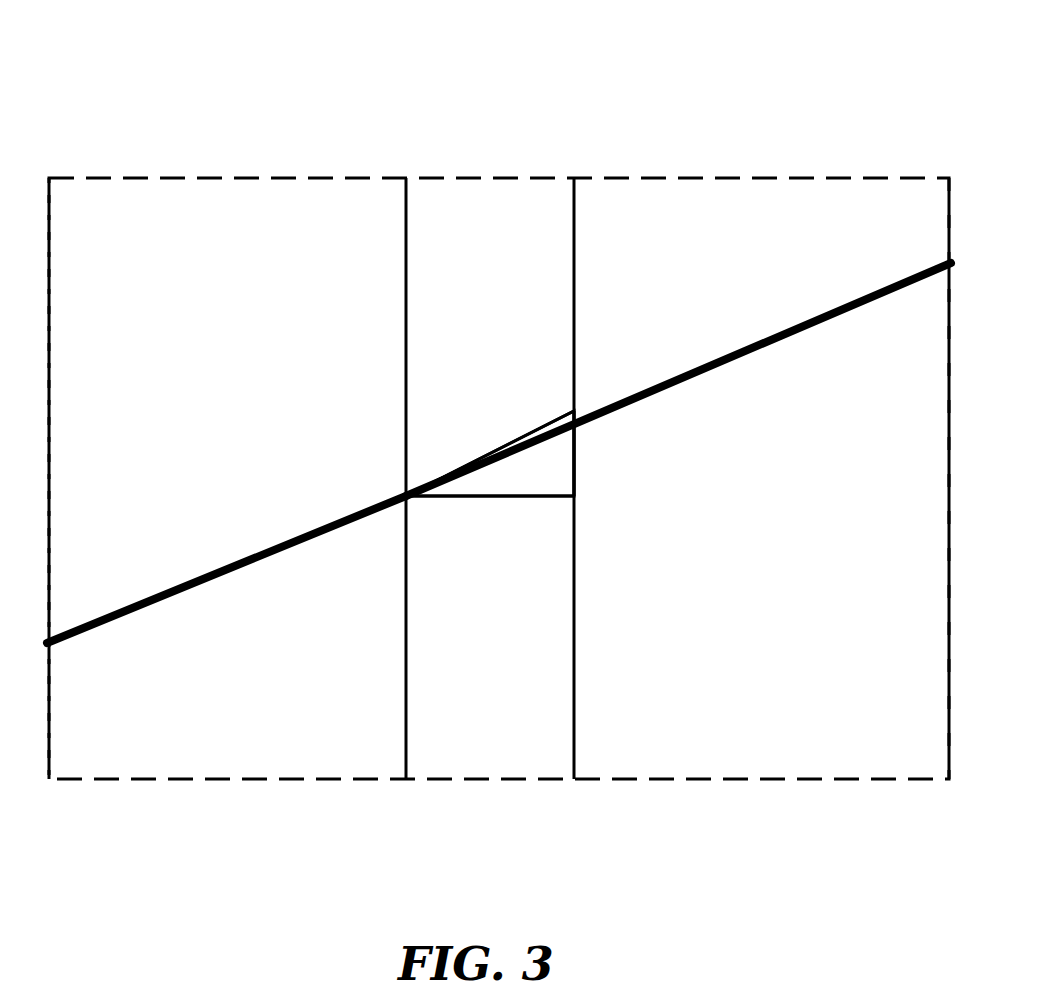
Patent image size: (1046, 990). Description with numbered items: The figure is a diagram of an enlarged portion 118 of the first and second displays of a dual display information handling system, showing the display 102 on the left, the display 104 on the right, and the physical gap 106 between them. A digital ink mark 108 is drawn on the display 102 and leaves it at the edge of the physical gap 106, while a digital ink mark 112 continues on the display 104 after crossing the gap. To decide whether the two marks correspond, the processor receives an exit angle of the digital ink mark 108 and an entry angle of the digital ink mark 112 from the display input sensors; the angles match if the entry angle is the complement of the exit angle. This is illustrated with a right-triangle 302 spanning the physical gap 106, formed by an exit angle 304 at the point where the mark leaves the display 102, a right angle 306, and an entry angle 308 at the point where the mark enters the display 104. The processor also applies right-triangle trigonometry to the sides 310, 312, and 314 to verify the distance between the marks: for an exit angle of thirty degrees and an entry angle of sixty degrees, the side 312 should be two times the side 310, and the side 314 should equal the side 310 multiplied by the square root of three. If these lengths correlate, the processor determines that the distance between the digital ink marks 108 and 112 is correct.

The enlarged portion 118 is at (302, 176).
The display 102 is at (153, 244).
The display 104 is at (739, 244).
The physical gap 106 is at (502, 244).
The digital ink mark 108 is at (302, 537).
The digital ink mark 112 is at (835, 313).
The right-triangle 302 is at (469, 353).
The exit angle 304 is at (442, 490).
The right angle 306 is at (565, 485).
The entry angle 308 is at (565, 425).
The side 310 is at (575, 458).
The side 312 is at (495, 445).
The side 314 is at (499, 497).